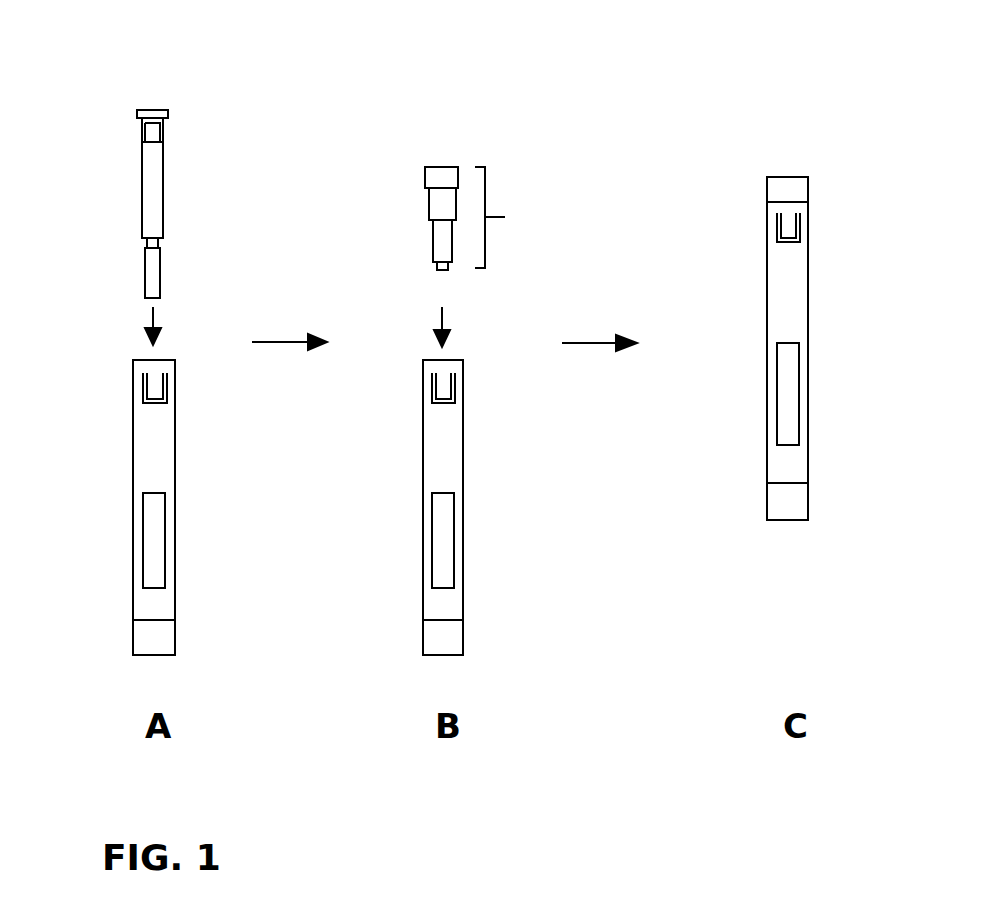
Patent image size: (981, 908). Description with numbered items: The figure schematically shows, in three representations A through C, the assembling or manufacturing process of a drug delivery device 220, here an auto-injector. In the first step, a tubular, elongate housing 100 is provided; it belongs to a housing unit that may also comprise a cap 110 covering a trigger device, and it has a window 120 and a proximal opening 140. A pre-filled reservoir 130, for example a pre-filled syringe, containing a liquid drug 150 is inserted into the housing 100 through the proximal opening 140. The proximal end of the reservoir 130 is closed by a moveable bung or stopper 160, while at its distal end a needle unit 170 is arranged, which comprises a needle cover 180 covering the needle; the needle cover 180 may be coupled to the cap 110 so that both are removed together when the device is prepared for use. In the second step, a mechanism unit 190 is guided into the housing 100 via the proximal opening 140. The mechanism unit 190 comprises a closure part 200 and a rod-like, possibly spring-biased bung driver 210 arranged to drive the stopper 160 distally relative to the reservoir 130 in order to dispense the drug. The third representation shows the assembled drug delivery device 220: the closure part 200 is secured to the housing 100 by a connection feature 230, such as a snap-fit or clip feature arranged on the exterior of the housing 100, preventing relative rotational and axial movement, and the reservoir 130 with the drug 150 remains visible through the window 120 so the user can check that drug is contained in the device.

The housing 100 is at (160, 453).
The cap 110 is at (165, 642).
The window 120 is at (155, 530).
The reservoir 130 is at (156, 200).
The proximal opening 140 is at (147, 358).
The drug 150 is at (155, 170).
The stopper 160 is at (152, 125).
The needle unit 170 is at (157, 263).
The needle cover 180 is at (150, 289).
The mechanism unit 190 is at (497, 217).
The closure part 200 is at (442, 178).
The bung driver 210 is at (447, 242).
The drug delivery device 220 is at (838, 100).
The connection feature 230 is at (790, 227).